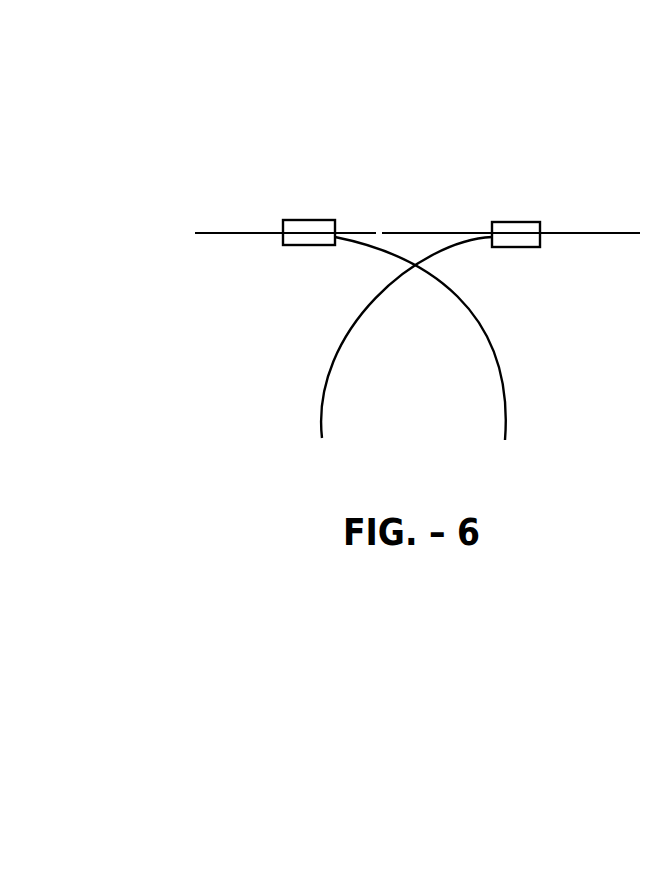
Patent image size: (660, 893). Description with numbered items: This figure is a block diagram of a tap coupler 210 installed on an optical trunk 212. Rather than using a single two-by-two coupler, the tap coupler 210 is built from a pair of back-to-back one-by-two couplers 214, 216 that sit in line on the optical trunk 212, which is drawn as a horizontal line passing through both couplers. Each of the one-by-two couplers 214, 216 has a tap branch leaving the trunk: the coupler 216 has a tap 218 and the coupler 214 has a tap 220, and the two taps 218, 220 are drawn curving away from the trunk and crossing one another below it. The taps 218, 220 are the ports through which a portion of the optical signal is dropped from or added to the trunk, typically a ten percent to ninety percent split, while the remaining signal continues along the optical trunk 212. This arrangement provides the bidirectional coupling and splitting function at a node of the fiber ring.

The tap coupler 210 is at (212, 118).
The optical trunk 212 is at (233, 230).
The 1:2 coupler 214 is at (525, 222).
The 1:2 coupler 216 is at (318, 220).
The tap 218 is at (488, 338).
The tap 220 is at (345, 337).